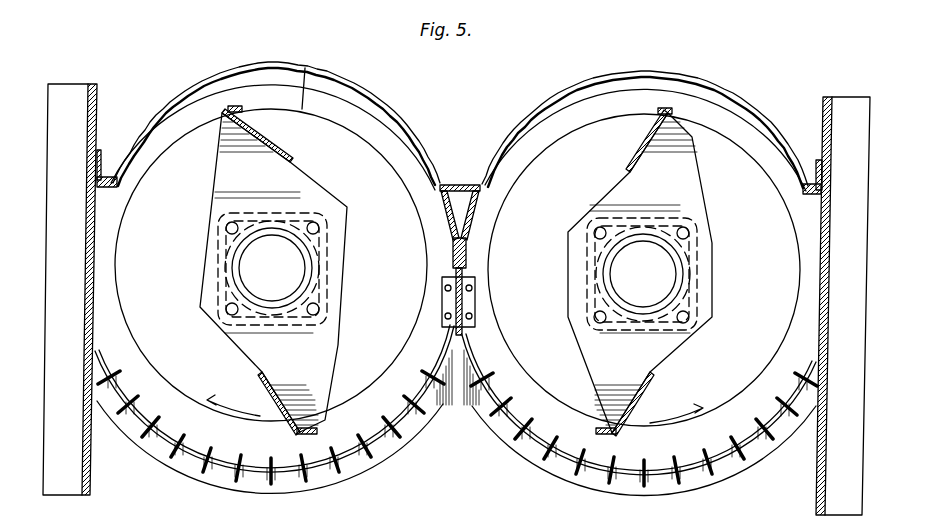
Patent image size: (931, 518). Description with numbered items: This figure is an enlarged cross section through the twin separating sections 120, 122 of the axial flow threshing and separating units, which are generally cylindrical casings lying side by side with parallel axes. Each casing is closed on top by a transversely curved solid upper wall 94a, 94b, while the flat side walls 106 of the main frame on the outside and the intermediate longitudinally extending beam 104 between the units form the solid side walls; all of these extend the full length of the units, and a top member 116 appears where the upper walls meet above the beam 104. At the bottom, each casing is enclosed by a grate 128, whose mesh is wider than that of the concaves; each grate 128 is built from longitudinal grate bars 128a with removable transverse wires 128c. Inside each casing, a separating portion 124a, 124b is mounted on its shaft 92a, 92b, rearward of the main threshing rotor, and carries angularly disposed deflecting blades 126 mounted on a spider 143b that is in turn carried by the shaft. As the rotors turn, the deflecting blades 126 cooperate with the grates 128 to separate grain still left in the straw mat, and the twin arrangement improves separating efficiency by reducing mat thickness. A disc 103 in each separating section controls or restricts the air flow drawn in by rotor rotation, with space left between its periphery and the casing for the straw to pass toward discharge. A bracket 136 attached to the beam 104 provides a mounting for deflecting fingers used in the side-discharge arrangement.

The shaft 92a is at (307, 250).
The shaft 92b is at (673, 257).
The right upper wall 94a is at (396, 113).
The left upper wall 94b is at (527, 108).
The disc 103 is at (316, 70).
The intermediate beam 104 is at (476, 208).
The side wall 106 is at (90, 212).
The top cross bar 116 is at (418, 150).
The separating section 120 is at (134, 271).
The separating section 122 is at (788, 297).
The separating portion 124a is at (355, 330).
The separating portion 124b is at (564, 344).
The deflecting blade 126 is at (235, 108).
The grate 128 is at (155, 460).
The longitudinal grate bar 128a is at (233, 472).
The transverse wire 128c is at (327, 472).
The bracket 136 is at (475, 303).
The spider 143b is at (286, 182).